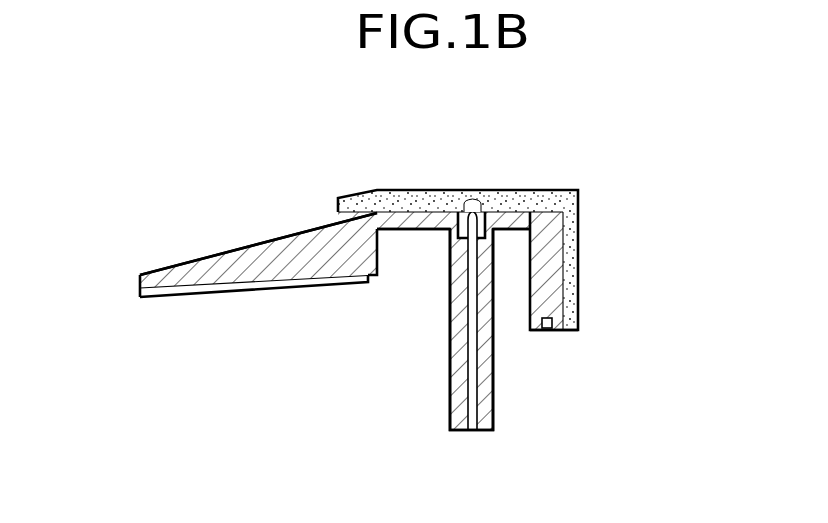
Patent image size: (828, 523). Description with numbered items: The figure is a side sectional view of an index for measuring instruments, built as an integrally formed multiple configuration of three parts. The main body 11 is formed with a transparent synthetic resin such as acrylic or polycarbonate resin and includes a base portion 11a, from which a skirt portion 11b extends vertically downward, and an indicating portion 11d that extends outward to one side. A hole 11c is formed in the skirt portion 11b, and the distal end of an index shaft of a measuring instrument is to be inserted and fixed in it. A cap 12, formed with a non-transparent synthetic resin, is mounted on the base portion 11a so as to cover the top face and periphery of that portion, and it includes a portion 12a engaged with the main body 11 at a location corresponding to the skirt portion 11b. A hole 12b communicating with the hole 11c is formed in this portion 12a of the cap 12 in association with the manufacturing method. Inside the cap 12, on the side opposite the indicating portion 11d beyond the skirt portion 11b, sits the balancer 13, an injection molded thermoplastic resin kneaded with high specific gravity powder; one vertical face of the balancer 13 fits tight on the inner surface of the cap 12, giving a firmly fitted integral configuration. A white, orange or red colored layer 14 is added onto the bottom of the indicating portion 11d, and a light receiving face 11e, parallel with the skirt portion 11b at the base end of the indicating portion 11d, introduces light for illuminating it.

The main body 11 is at (272, 237).
The base portion 11a is at (422, 232).
The skirt portion 11b is at (450, 377).
The hole 11c is at (468, 380).
The indicating portion 11d is at (188, 267).
The light receiving face 11e is at (370, 258).
The cap 12 is at (578, 197).
The portion to be engaged 12a is at (481, 209).
The hole 12b is at (466, 206).
The balancer 13 is at (553, 270).
The colored layer 14 is at (198, 293).